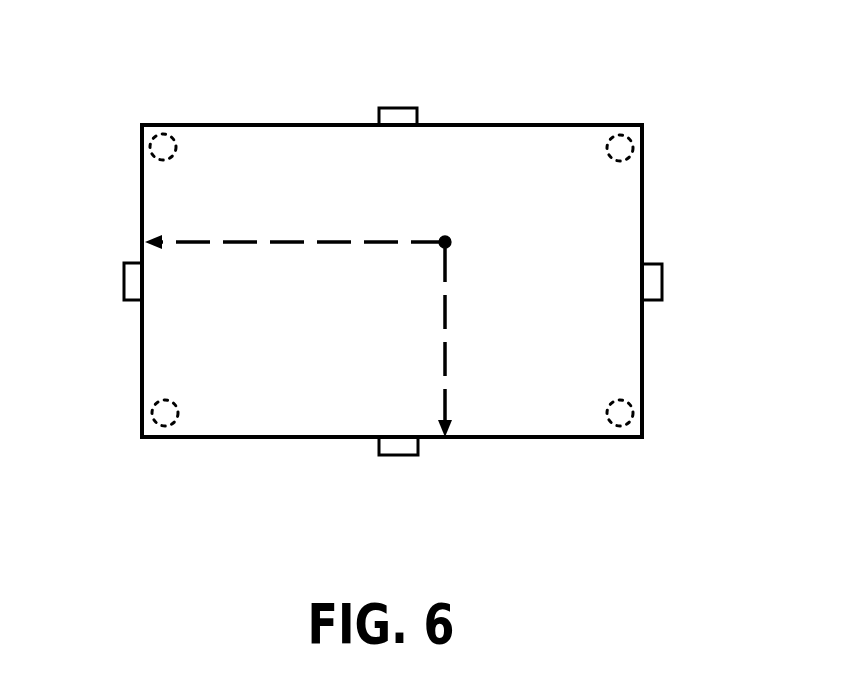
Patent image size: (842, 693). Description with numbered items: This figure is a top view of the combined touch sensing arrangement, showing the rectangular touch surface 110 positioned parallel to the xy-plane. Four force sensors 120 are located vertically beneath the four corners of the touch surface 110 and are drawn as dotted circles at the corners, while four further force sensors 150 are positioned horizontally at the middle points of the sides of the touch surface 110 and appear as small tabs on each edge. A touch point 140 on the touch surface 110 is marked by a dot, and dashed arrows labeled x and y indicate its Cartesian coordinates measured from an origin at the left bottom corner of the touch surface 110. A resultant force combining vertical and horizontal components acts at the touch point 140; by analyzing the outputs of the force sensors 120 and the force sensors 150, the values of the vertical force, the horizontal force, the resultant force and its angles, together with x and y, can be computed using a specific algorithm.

The touch surface 110 is at (310, 135).
The force sensors 120 is at (147, 143).
The touch point 140 is at (440, 237).
The force sensors 150 is at (395, 113).